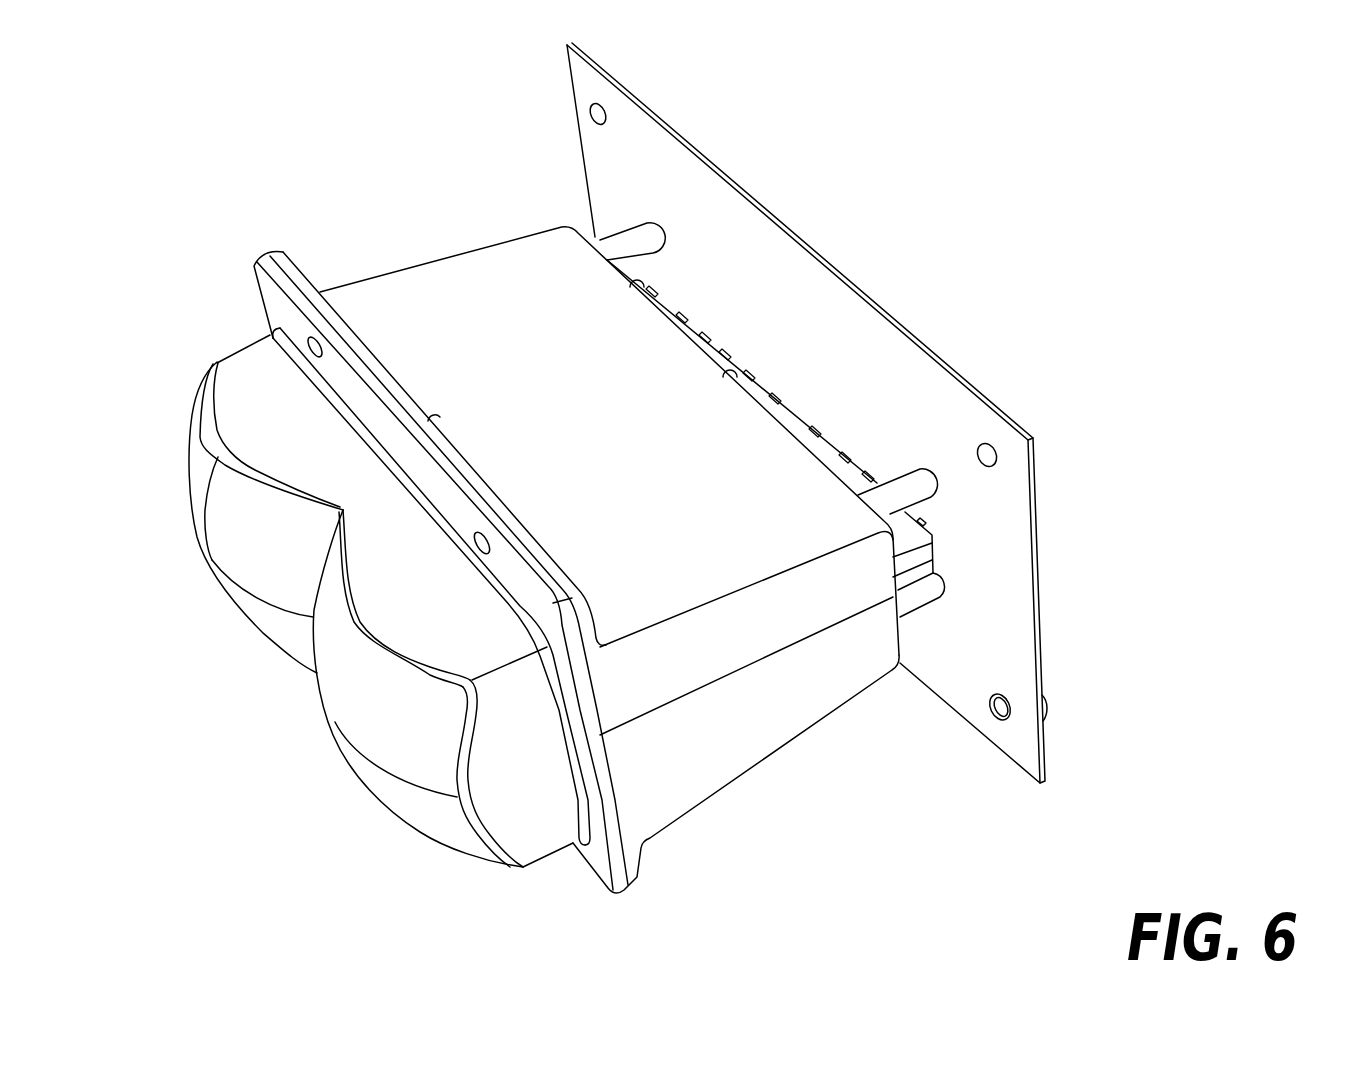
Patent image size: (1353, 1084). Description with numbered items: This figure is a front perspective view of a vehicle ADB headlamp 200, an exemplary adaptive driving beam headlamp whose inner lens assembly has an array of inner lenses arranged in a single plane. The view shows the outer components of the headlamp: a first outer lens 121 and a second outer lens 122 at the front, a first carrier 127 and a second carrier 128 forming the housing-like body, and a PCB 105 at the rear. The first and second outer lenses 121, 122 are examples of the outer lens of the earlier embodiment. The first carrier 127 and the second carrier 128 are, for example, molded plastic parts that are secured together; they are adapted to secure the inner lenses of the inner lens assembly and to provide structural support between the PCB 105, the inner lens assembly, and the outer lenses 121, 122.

The vehicle ADB headlamp 200 is at (231, 106).
The PCB 105 is at (947, 403).
The first carrier 127 is at (458, 267).
The second carrier 128 is at (762, 725).
The first outer lens 121 is at (193, 453).
The second outer lens 122 is at (440, 822).